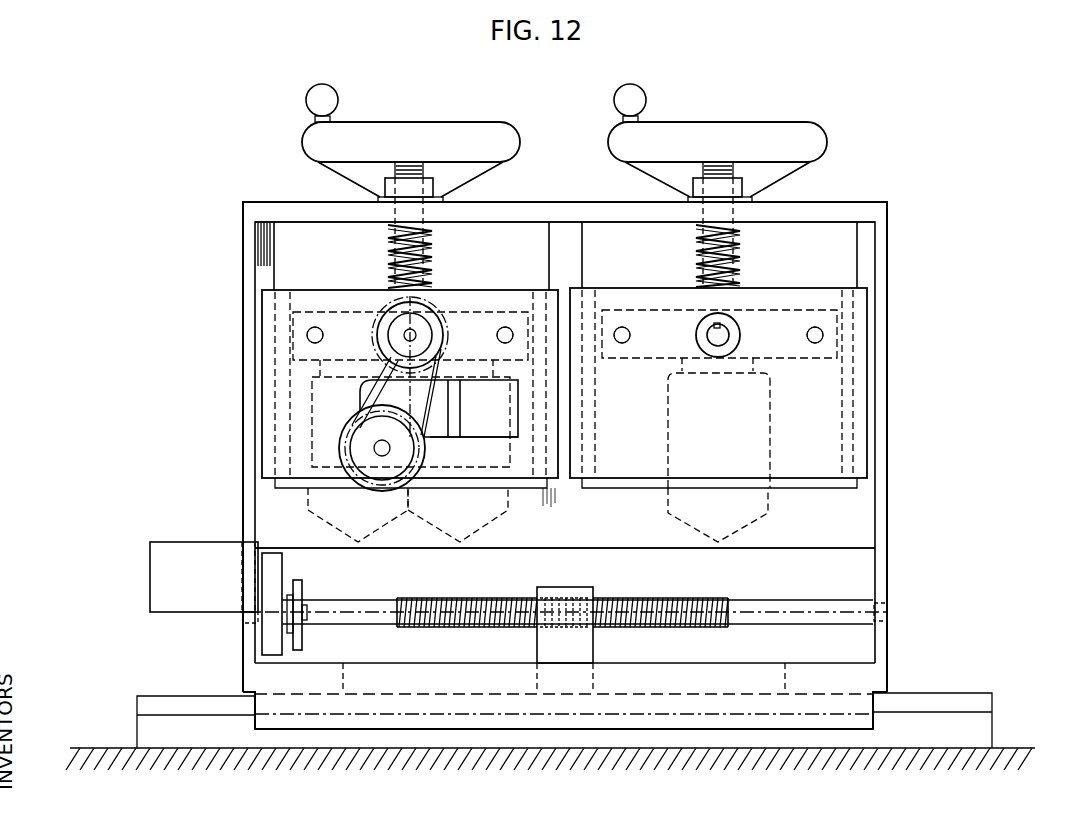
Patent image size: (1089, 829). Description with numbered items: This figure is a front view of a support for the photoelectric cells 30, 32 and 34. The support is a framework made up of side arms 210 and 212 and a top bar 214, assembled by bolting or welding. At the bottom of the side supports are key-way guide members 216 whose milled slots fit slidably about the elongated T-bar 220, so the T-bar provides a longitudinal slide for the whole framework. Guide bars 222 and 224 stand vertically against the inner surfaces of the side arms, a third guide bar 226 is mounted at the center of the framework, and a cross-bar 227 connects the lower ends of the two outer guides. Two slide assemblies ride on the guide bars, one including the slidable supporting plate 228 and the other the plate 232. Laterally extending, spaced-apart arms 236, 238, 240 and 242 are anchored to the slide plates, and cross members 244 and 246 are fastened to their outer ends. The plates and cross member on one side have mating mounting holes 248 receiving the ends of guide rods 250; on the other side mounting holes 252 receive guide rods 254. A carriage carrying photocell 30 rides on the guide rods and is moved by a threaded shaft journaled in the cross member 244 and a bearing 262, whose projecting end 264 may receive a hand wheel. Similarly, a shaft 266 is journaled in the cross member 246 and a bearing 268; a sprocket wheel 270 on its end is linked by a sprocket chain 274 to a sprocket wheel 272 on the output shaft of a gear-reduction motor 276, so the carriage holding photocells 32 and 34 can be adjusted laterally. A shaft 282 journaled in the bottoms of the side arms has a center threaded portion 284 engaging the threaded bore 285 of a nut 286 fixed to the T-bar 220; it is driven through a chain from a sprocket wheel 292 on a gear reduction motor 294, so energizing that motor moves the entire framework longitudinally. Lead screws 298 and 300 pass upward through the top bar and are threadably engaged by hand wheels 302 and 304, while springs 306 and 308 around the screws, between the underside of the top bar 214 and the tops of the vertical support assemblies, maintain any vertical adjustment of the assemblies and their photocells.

The photoelectric cell 30 is at (753, 524).
The photoelectric cell 32 is at (496, 524).
The photoelectric cell 34 is at (312, 520).
The side arm 210 is at (887, 250).
The side arm 212 is at (242, 246).
The top bar 214 is at (808, 204).
The key-way guide member 216 is at (868, 679).
The T-bar 220 is at (973, 731).
The guide bar 222 is at (857, 240).
The guide bar 224 is at (266, 244).
The third guide bar 226 is at (548, 238).
The cross-bar 227 is at (632, 531).
The slidable supporting plate 228 is at (803, 292).
The slidable supporting plate 232 is at (500, 291).
The laterally-extending arm 236 is at (846, 455).
The laterally-extending arm 238 is at (598, 471).
The laterally-extending arm 240 is at (531, 461).
The laterally-extending arm 242 is at (292, 479).
The cross member 244 is at (778, 362).
The cross member 246 is at (347, 311).
The mounting hole 248 is at (628, 331).
The guide rod 250 is at (628, 340).
The mounting hole 252 is at (318, 331).
The guide rod 254 is at (321, 340).
The bearing 262 is at (712, 314).
The shaft end 264 is at (718, 342).
The shaft 266 is at (404, 333).
The bearing 268 is at (418, 326).
The sprocket wheel 270 is at (366, 380).
The sprocket wheel 272 is at (372, 416).
The sprocket chain 274 is at (450, 394).
The gear-reduction motor 276 is at (437, 438).
The shaft 282 is at (820, 599).
The threaded portion 284 is at (630, 598).
The threaded bore 285 is at (564, 596).
The nut 286 is at (553, 586).
The sprocket wheel 292 is at (304, 585).
The gear reduction motor 294 is at (196, 542).
The lead screw 298 is at (700, 244).
The lead screw 300 is at (392, 244).
The hand wheel 302 is at (715, 132).
The hand wheel 304 is at (411, 132).
The spring 306 is at (700, 229).
The spring 308 is at (393, 229).